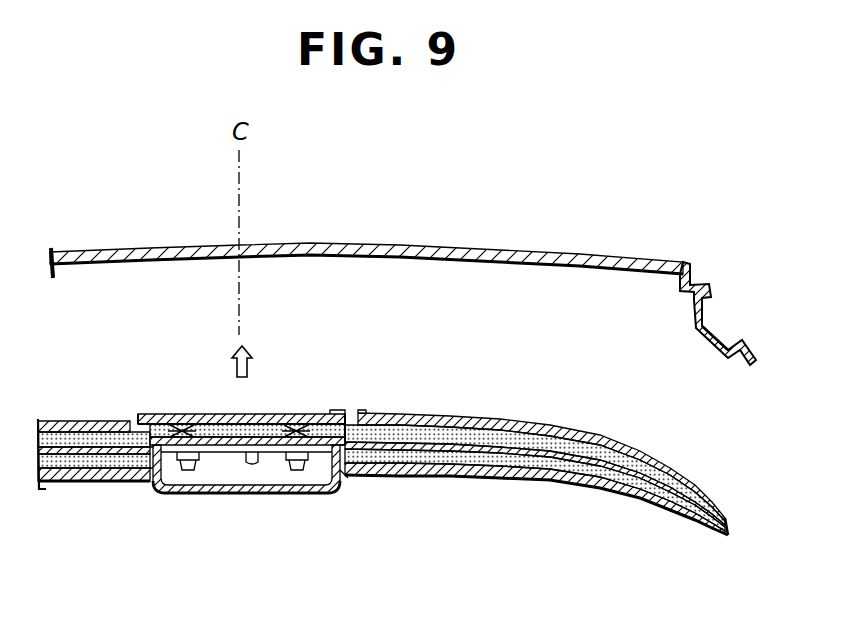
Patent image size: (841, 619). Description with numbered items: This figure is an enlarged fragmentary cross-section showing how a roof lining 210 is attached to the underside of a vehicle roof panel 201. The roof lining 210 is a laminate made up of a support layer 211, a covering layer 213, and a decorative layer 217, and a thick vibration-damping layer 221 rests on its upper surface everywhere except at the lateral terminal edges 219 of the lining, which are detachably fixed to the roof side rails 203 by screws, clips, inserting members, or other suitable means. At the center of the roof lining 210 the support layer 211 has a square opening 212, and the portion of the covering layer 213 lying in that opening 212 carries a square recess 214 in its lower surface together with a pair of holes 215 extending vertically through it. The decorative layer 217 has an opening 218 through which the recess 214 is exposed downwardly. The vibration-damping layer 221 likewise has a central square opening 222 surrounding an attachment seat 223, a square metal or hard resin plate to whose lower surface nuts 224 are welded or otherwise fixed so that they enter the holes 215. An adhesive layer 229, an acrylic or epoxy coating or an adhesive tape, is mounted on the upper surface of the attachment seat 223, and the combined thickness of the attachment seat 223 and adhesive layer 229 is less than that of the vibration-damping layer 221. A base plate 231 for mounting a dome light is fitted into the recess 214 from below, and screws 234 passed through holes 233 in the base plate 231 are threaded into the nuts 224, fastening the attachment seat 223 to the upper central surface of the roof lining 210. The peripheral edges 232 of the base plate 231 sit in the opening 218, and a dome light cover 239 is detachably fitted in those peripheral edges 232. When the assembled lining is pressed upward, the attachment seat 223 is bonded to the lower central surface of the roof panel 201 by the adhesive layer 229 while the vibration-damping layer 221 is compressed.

The roof panel 201 is at (365, 247).
The roof side rail 203 is at (718, 330).
The roof lining 210 is at (554, 452).
The support layer 211 is at (452, 481).
The opening 212 is at (128, 481).
The covering layer 213 is at (522, 413).
The recess 214 is at (250, 412).
The holes 215 is at (158, 413).
The decorative layer 217 is at (585, 487).
The opening 218 is at (348, 478).
The terminal edges 219 is at (708, 498).
The vibration-damping layer 221 is at (452, 413).
The opening 222 is at (134, 414).
The attachment seat 223 is at (268, 413).
The nuts 224 is at (180, 413).
The adhesive layer 229 is at (212, 413).
The base plate 231 is at (240, 476).
The peripheral edges 232 is at (152, 488).
The holes 233 is at (182, 470).
The screws 234 is at (210, 484).
The dome light cover 239 is at (262, 494).